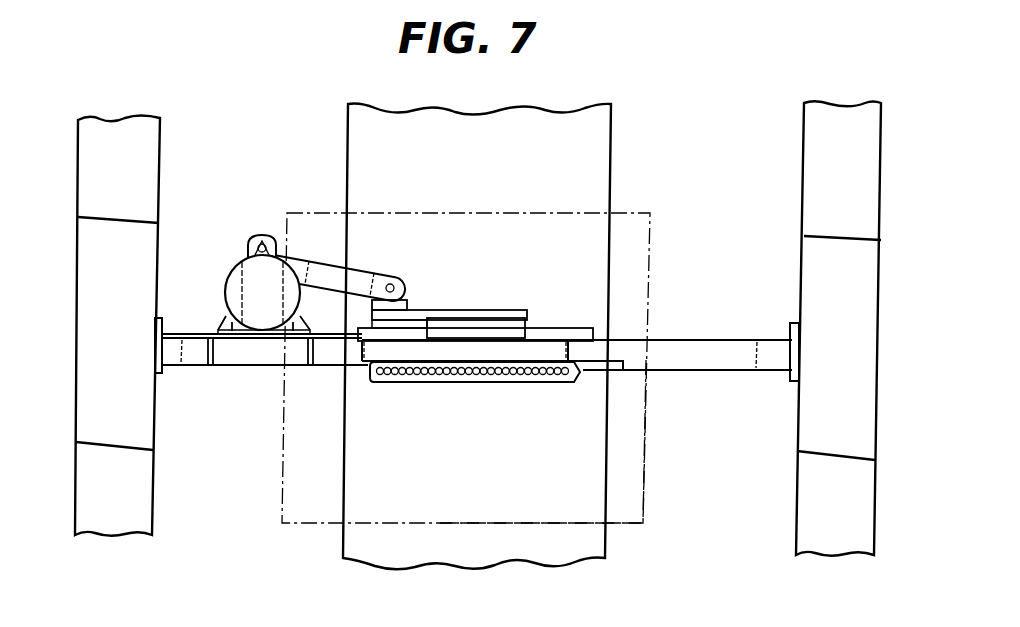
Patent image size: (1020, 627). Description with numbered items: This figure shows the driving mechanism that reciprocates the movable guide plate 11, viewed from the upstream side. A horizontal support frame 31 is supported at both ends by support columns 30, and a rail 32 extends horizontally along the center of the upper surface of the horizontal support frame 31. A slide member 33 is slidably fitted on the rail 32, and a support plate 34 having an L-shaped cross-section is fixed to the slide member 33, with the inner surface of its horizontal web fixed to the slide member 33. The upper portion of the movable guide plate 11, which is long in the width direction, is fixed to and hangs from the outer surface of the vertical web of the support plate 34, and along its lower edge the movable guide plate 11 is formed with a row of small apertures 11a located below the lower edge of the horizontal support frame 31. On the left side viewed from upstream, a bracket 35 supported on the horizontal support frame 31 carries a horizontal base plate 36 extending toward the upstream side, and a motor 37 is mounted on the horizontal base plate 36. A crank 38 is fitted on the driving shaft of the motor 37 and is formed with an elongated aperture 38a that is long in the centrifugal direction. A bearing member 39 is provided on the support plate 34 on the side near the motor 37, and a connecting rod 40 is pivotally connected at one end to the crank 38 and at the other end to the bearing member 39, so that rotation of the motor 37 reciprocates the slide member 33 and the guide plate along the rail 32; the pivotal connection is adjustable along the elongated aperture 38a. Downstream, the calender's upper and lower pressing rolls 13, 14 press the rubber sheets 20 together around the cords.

The movable guide plate 11 is at (458, 382).
The small apertures 11a is at (407, 378).
The upper pressing roll 13 is at (650, 213).
The lower pressing roll 14 is at (643, 523).
The rubber sheets 20 is at (613, 143).
The support columns 30 is at (160, 150).
The horizontal support frame 31 is at (715, 339).
The rail 32 is at (560, 327).
The slide member 33 is at (500, 320).
The support plate 34 is at (463, 309).
The bracket 35 is at (295, 352).
The horizontal base plate 36 is at (178, 333).
The motor 37 is at (232, 274).
The crank 38 is at (256, 237).
The elongated aperture 38a is at (263, 234).
The bearing member 39 is at (412, 306).
The connecting rod 40 is at (318, 262).